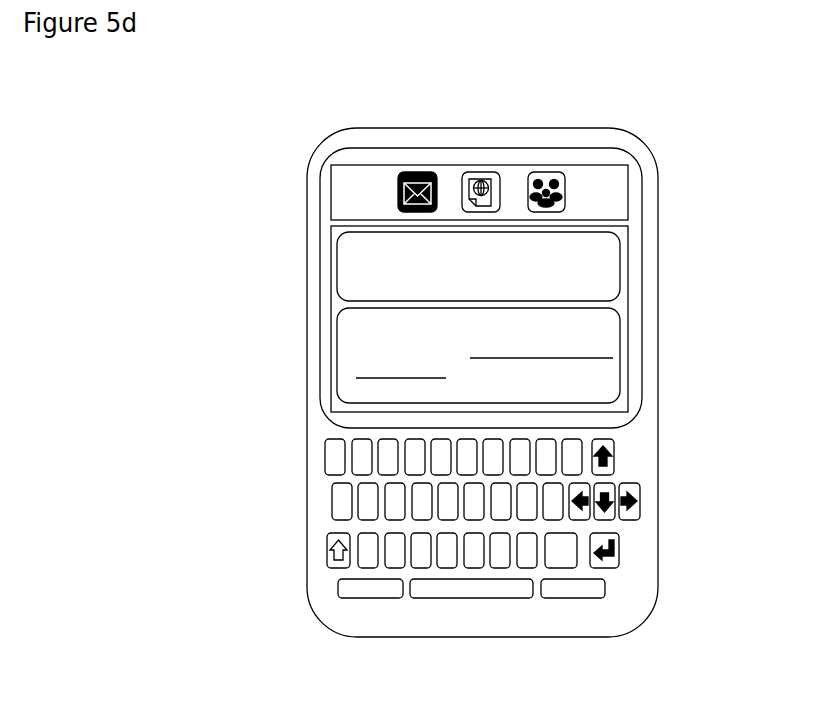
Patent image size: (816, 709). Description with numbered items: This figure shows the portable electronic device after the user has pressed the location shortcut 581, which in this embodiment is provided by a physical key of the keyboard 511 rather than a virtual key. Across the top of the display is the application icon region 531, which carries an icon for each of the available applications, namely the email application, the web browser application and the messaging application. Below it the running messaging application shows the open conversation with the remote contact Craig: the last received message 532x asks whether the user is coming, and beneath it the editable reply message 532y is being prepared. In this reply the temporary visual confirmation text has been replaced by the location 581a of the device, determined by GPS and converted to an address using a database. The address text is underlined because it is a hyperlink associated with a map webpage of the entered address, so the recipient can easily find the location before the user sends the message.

The application icon region 531 is at (337, 188).
The last received message 532x is at (615, 272).
The composed message bubble 532y is at (552, 353).
The location 581a is at (613, 355).
The virtual keyboard 511 is at (363, 457).
The location shortcut 581 is at (592, 588).